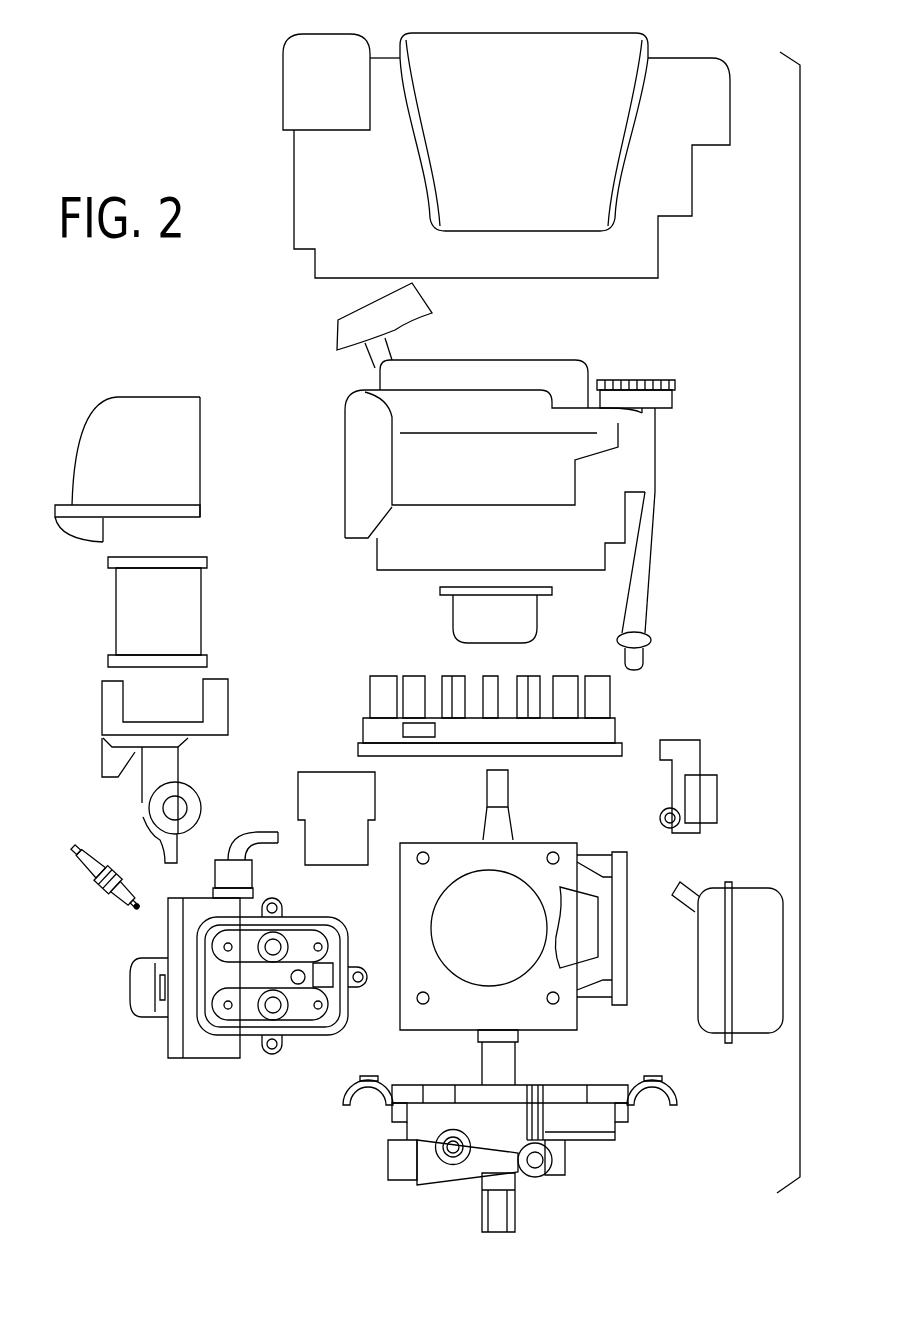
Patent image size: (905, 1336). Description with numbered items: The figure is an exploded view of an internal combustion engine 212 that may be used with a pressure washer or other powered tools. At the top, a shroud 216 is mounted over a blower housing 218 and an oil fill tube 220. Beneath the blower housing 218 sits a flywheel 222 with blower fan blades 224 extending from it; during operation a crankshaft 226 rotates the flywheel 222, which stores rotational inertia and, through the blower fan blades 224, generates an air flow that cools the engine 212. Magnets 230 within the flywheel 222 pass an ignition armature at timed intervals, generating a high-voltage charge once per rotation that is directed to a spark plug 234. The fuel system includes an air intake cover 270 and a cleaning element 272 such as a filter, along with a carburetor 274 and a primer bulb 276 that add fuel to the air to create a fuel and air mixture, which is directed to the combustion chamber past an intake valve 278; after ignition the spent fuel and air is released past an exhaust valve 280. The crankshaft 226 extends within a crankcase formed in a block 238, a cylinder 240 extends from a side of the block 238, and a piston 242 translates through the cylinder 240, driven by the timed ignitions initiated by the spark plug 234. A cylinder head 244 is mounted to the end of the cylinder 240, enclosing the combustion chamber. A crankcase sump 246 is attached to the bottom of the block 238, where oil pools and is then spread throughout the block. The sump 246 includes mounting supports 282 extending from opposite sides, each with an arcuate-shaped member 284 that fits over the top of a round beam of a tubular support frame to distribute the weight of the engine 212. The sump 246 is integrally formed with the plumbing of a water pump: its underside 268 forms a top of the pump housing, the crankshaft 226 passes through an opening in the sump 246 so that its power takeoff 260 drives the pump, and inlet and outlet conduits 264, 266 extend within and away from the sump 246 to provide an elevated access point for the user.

The internal combustion engine 212 is at (800, 597).
The shroud 216 is at (670, 72).
The blower housing 218 is at (473, 403).
The oil fill tube 220 is at (652, 567).
The flywheel 222 is at (615, 730).
The blower fan blades 224 is at (425, 676).
The crankshaft 226 is at (510, 818).
The magnets 230 is at (403, 733).
The spark plug 234 is at (100, 882).
The block 238 is at (645, 865).
The cylinder 240 is at (417, 898).
The piston 242 is at (478, 956).
The cylinder head 244 is at (212, 1058).
The crankcase sump 246 is at (632, 1138).
The power takeoff 260 is at (515, 1210).
The inlet conduit 264 is at (538, 1172).
The outlet conduit 266 is at (455, 1165).
The underside of the sump 268 is at (432, 1205).
The air intake cover 270 is at (162, 410).
The cleaning element 272 is at (194, 610).
The carburetor 274 is at (297, 777).
The primer bulb 276 is at (165, 808).
The intake valve 278 is at (300, 943).
The exhaust valve 280 is at (200, 977).
The mounting supports 282 is at (382, 1057).
The arcuate-shaped member 284 is at (363, 1097).